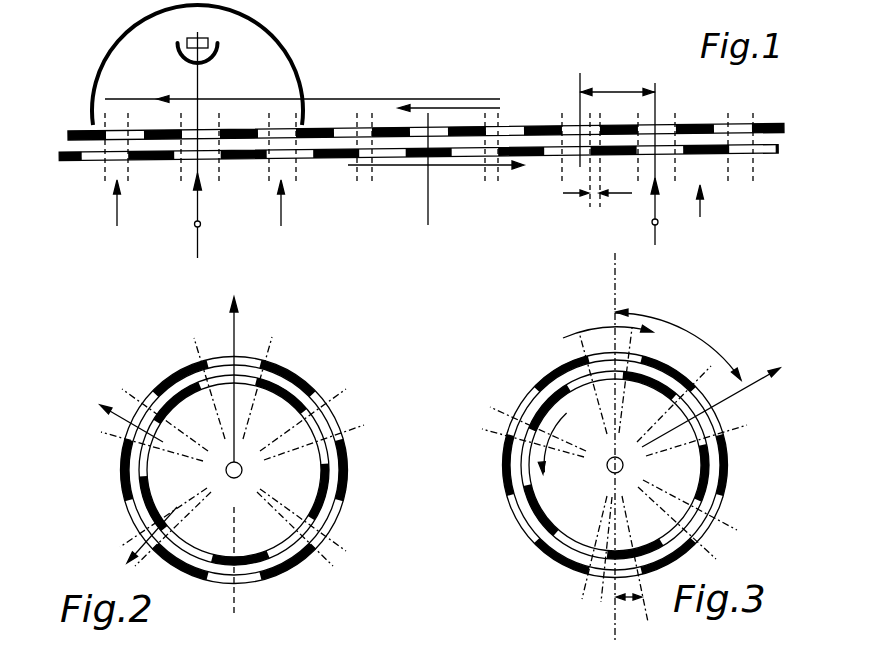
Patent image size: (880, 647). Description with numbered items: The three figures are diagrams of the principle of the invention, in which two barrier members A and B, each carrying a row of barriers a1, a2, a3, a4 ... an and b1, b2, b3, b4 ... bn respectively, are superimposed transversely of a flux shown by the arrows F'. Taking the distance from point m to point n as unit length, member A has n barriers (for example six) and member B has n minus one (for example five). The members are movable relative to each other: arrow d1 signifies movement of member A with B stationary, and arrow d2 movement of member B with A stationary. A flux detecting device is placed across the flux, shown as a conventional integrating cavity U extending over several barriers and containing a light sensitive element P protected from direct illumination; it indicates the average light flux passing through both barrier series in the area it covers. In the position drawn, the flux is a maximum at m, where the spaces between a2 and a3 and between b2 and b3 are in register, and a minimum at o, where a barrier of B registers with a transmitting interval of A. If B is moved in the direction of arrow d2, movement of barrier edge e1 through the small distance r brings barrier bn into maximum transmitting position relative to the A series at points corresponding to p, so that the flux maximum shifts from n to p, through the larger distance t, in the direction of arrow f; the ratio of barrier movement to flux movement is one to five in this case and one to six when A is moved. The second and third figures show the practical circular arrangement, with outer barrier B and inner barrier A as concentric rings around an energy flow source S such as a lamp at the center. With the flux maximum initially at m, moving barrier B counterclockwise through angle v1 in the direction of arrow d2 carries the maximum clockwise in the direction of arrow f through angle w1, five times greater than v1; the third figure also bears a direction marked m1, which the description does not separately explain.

In FIG. 1, the barrier member A is at (709, 121).
In FIG. 2, the barrier member A is at (278, 362).
In FIG. 3, the barrier member A is at (615, 465).
In FIG. 1, the barrier member B is at (711, 179).
In FIG. 2, the barrier member B is at (323, 425).
In FIG. 3, the barrier member B is at (615, 465).
In FIG. 1, the barrier a1 is at (80, 128).
In FIG. 1, the barrier a2 is at (168, 108).
In FIG. 1, the barrier a3 is at (247, 110).
In FIG. 1, the barrier a4 is at (328, 130).
In FIG. 1, the barrier b1 is at (72, 160).
In FIG. 1, the barrier b2 is at (163, 161).
In FIG. 1, the barrier b3 is at (247, 161).
In FIG. 1, the barrier b4 is at (333, 161).
In FIG. 1, the arrow f is at (400, 99).
In FIG. 3, the arrow f is at (565, 337).
In FIG. 1, the arrow d1 is at (502, 108).
In FIG. 1, the arrow d2 is at (405, 167).
In FIG. 3, the arrow d2 is at (550, 410).
In FIG. 1, the point o is at (428, 215).
In FIG. 1, the barrier edge e1 is at (588, 151).
In FIG. 1, the distance r is at (595, 200).
In FIG. 1, the point p is at (583, 74).
In FIG. 1, the distance t is at (633, 88).
In FIG. 1, the barrier an is at (621, 128).
In FIG. 1, the barrier bn is at (621, 160).
In FIG. 1, the point n is at (658, 223).
In FIG. 1, the point m is at (201, 225).
In FIG. 2, the point m is at (230, 367).
In FIG. 1, the flux arrows F' is at (424, 216).
In FIG. 2, the flux arrows F' is at (113, 484).
In FIG. 1, the integrating cavity U is at (300, 60).
In FIG. 1, the light sensitive element P is at (216, 31).
In FIG. 2, the energy flow source S is at (224, 473).
In FIG. 3, the energy flow source S is at (615, 465).
In FIG. 3, the angle w1 is at (700, 340).
In FIG. 3, the axis m1 is at (745, 382).
In FIG. 3, the angle v1 is at (617, 600).